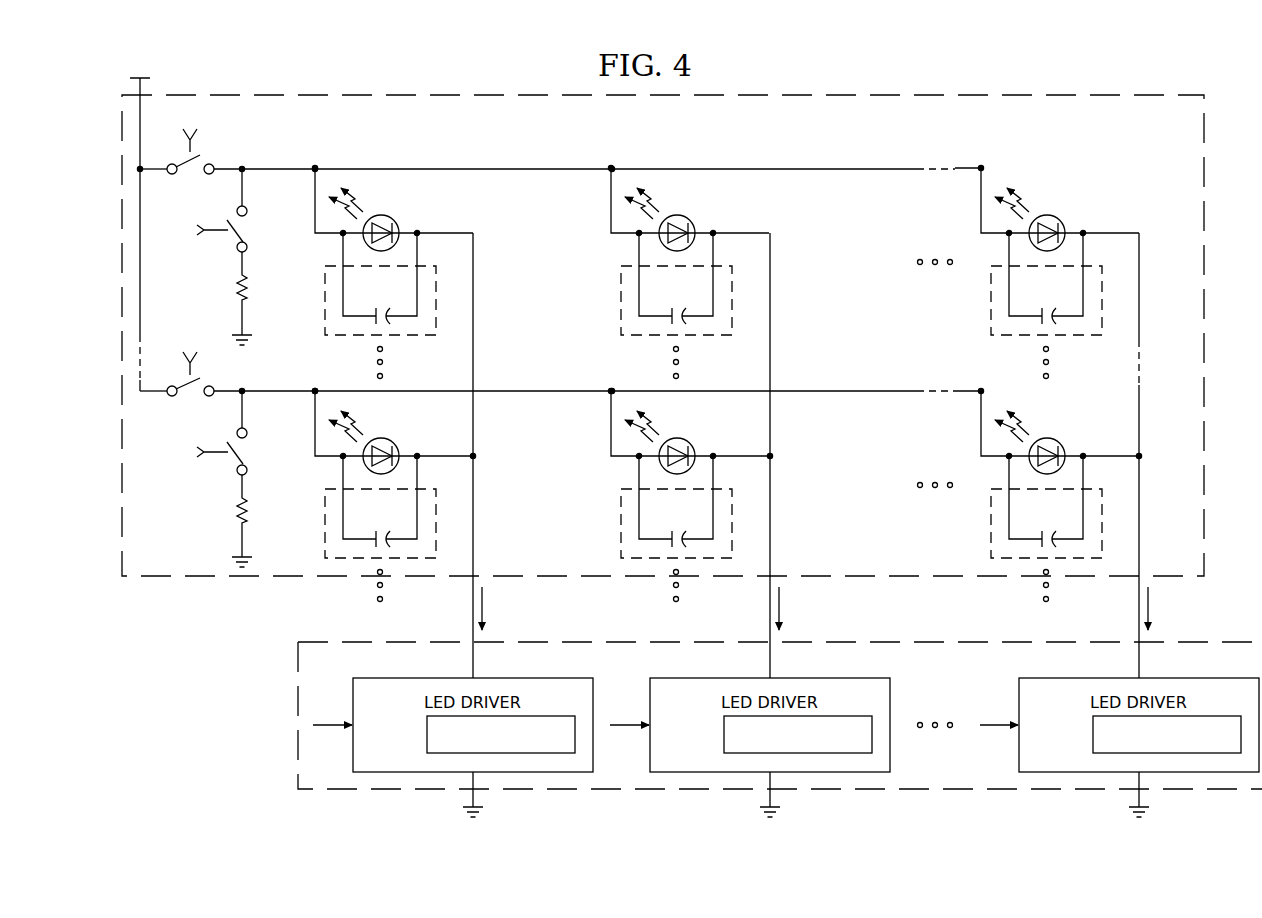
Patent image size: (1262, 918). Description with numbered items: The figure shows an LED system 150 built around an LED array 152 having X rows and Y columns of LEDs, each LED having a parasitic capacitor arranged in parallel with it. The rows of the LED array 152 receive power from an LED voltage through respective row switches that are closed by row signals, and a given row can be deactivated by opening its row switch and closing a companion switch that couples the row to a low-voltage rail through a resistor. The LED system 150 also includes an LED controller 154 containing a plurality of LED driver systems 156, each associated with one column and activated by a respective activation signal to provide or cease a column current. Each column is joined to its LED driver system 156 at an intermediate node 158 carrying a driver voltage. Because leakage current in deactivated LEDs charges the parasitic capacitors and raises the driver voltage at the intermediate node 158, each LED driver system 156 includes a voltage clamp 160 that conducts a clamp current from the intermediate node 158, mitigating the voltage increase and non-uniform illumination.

The LED system 150 is at (228, 662).
The LED array 152 is at (661, 131).
The LED controller 154 is at (297, 740).
The LED driver system 156 is at (408, 720).
The intermediate node 158 is at (475, 228).
The voltage clamp 160 is at (427, 735).